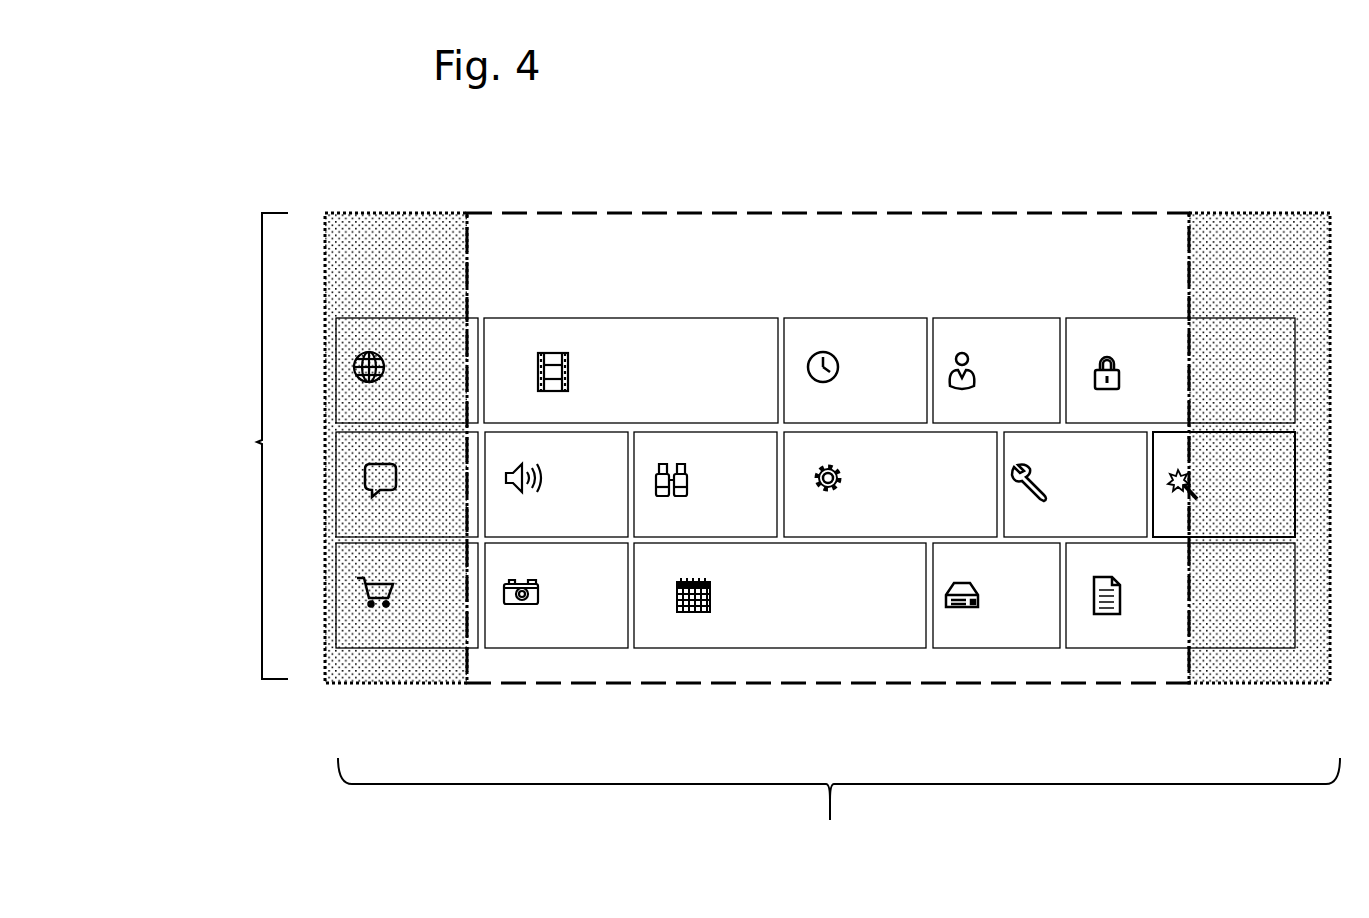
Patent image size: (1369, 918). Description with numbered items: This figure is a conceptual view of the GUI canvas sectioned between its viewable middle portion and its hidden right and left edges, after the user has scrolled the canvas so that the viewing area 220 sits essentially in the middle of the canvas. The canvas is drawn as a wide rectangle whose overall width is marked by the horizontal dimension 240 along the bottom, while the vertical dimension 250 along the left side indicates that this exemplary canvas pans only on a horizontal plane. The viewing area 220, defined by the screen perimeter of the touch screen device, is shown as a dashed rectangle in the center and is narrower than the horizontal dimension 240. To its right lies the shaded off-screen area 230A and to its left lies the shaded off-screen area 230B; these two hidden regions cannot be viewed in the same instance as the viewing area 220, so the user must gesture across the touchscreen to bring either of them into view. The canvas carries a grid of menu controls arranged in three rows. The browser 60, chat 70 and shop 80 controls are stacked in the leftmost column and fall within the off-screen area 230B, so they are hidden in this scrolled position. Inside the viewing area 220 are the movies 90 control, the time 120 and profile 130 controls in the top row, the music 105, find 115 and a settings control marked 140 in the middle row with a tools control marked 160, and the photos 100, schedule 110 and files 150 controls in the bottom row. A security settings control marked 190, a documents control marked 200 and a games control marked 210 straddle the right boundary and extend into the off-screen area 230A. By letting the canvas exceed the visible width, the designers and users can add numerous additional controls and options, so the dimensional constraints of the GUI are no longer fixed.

The browser 60 is at (408, 318).
The chat 70 is at (350, 458).
The shop 80 is at (352, 632).
The movies 90 is at (549, 318).
The photos 100 is at (533, 648).
The music 105 is at (593, 529).
The schedule 110 is at (690, 650).
The find 115 is at (741, 529).
The time 120 is at (800, 318).
The profile 130 is at (965, 318).
The my settings tile 140 is at (929, 529).
The files 150 is at (958, 650).
The tools tile 160 is at (1110, 532).
The security settings tile 190 is at (1120, 318).
The documents tile 200 is at (1113, 650).
The games tile 210 is at (1259, 534).
The viewing area 220 is at (875, 214).
The off-screen area (right) 230A is at (1226, 213).
The off-screen area (left) 230B is at (360, 213).
The horizontal dimension 240 is at (839, 805).
The vertical dimension 250 is at (258, 442).